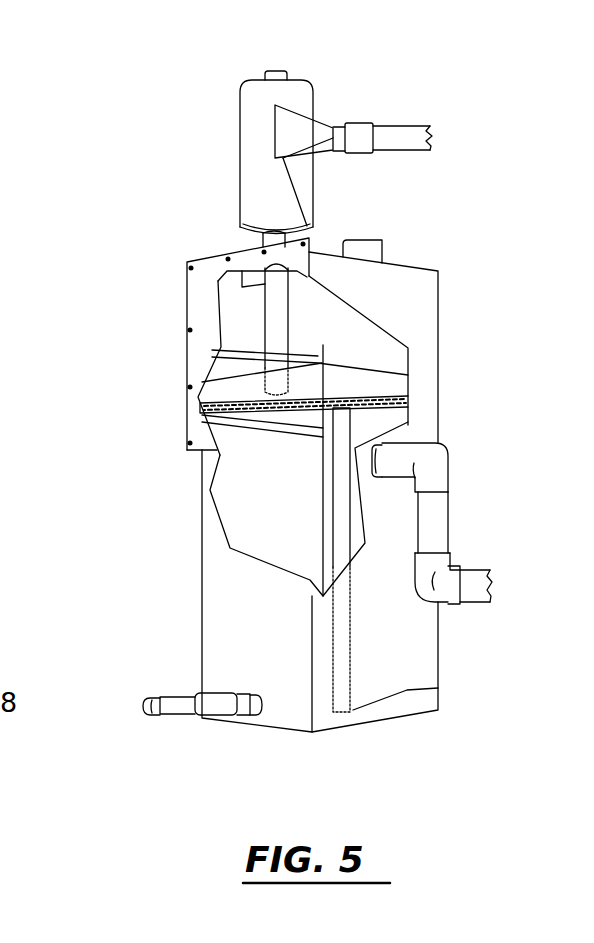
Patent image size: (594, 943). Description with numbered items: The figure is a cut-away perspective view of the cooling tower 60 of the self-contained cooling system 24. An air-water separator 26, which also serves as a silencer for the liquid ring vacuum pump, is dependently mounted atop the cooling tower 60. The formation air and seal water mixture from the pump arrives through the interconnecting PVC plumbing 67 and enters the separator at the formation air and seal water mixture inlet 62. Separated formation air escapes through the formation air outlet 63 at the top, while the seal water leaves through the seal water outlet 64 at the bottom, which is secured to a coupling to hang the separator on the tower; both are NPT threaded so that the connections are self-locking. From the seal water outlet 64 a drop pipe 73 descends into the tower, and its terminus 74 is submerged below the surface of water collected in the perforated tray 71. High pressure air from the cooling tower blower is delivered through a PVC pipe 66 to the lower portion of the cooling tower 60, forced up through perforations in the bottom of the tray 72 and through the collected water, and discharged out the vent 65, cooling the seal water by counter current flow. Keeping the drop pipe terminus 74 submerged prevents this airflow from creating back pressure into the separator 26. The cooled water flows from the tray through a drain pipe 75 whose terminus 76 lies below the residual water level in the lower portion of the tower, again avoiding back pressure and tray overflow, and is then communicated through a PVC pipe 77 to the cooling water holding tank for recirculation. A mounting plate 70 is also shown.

The self-contained cooling system 24 is at (0, 206).
The air-water separator 26 is at (300, 90).
The formation air outlet 63 is at (270, 70).
The formation air and seal water mixture inlet 62 is at (295, 133).
The PVC plumbing 67 is at (395, 136).
The seal water outlet 64 is at (240, 237).
The vent 65 is at (385, 238).
The mounting plate 70 is at (195, 290).
The cooling tower 60 is at (422, 415).
The perforated tray 71 is at (212, 388).
The bottom of the tray 72 is at (267, 420).
The drop pipe 73 is at (273, 340).
The drop pipe terminus 74 is at (293, 390).
The drain pipe 75 is at (342, 523).
The PVC pipe 66 is at (433, 525).
The drain pipe terminus 76 is at (440, 688).
The PVC pipe 77 is at (185, 705).